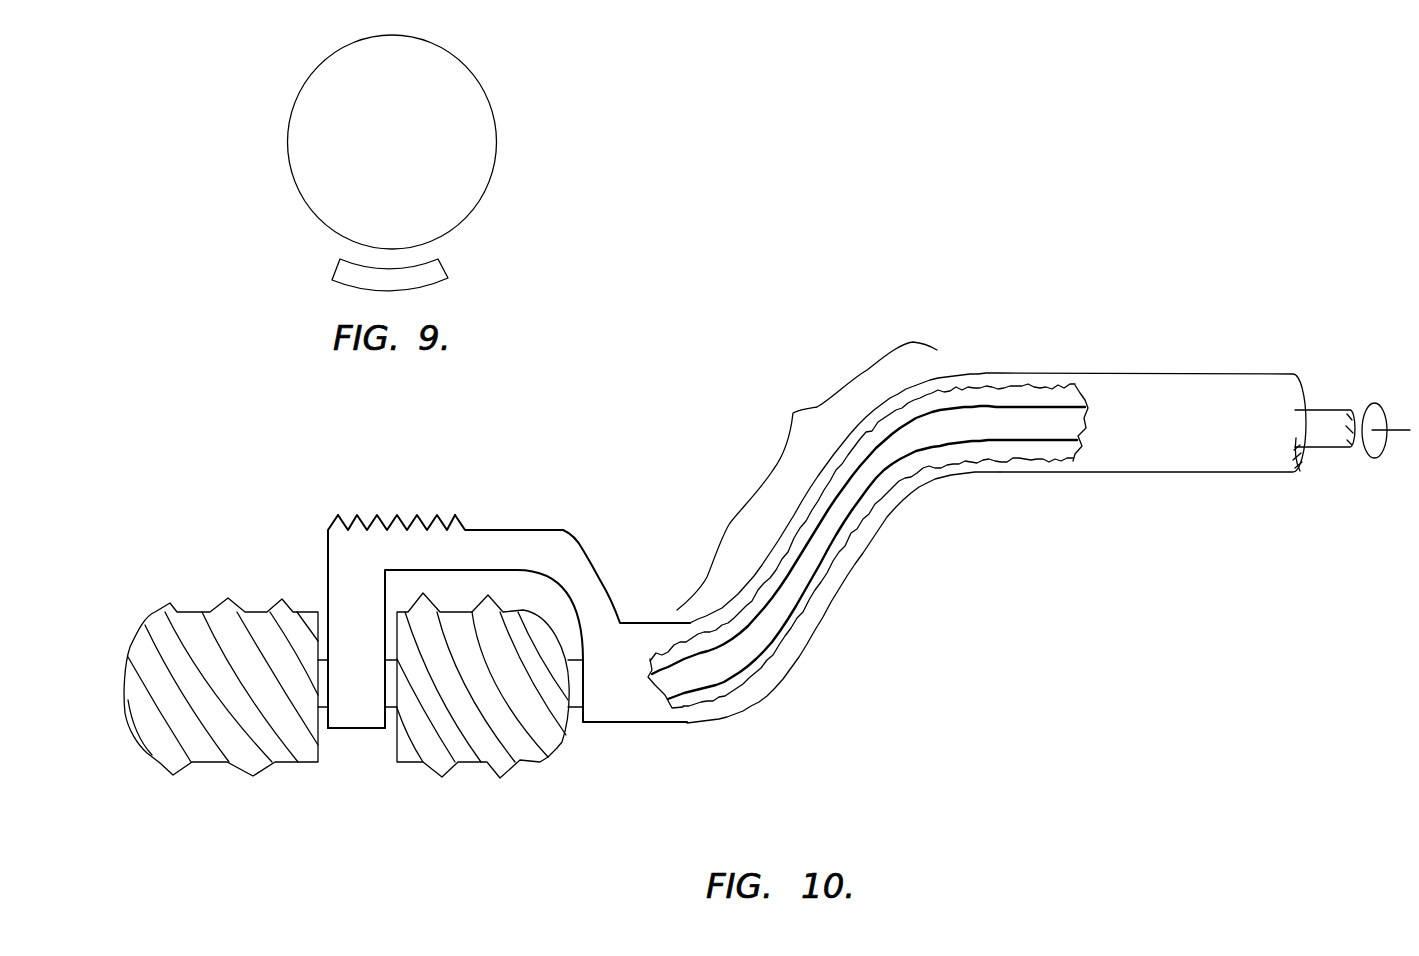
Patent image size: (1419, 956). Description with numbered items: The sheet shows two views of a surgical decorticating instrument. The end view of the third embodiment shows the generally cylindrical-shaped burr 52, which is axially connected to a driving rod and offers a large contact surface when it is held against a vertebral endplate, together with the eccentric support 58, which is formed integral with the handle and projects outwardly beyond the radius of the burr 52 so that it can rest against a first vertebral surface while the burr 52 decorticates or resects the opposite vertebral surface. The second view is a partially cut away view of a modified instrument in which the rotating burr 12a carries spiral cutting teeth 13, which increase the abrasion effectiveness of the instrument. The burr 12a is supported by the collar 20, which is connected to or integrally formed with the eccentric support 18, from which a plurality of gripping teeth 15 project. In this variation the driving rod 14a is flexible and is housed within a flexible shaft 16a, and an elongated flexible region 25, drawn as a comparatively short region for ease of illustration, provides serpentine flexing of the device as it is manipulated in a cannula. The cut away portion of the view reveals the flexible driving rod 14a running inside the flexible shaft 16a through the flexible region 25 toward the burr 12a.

In FIG. 9, the generally cylindrical-shaped burr 52 is at (322, 164).
In FIG. 9, the eccentric support 58 is at (417, 277).
In FIG. 10, the rotating burr 12a is at (186, 800).
In FIG. 10, the spiral cutting teeth 13 is at (171, 623).
In FIG. 10, the gripping teeth 15 is at (463, 492).
In FIG. 10, the eccentric support 18 is at (360, 551).
In FIG. 10, the collar 20 is at (357, 697).
In FIG. 10, the elongated flexible region 25 is at (793, 413).
In FIG. 10, the driving rod 14a is at (990, 418).
In FIG. 10, the flexible shaft 16a is at (670, 707).